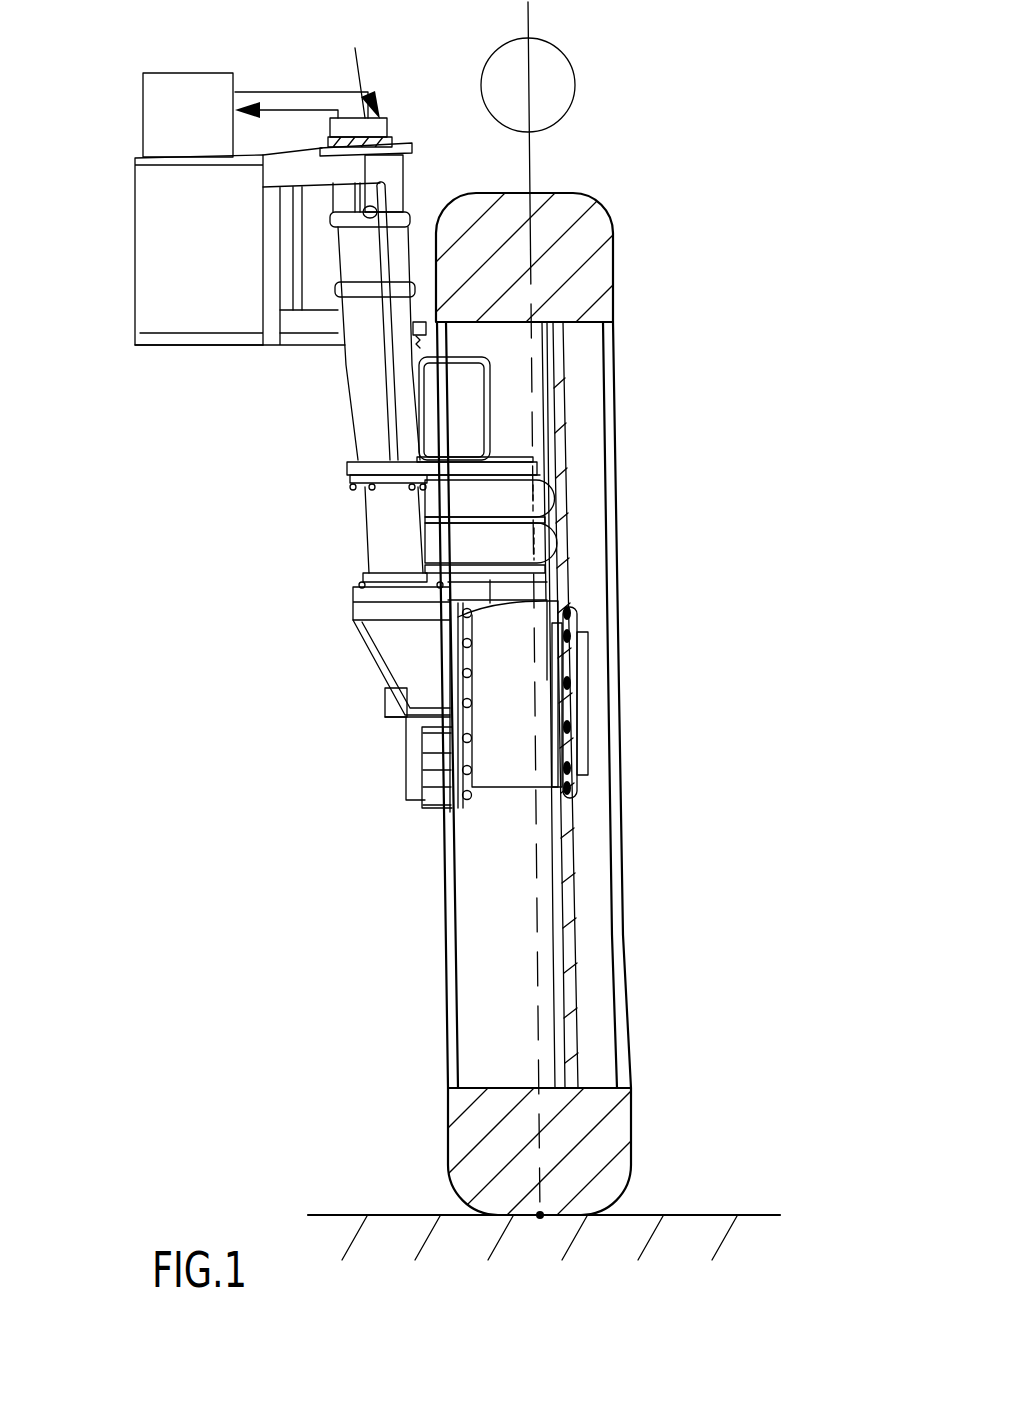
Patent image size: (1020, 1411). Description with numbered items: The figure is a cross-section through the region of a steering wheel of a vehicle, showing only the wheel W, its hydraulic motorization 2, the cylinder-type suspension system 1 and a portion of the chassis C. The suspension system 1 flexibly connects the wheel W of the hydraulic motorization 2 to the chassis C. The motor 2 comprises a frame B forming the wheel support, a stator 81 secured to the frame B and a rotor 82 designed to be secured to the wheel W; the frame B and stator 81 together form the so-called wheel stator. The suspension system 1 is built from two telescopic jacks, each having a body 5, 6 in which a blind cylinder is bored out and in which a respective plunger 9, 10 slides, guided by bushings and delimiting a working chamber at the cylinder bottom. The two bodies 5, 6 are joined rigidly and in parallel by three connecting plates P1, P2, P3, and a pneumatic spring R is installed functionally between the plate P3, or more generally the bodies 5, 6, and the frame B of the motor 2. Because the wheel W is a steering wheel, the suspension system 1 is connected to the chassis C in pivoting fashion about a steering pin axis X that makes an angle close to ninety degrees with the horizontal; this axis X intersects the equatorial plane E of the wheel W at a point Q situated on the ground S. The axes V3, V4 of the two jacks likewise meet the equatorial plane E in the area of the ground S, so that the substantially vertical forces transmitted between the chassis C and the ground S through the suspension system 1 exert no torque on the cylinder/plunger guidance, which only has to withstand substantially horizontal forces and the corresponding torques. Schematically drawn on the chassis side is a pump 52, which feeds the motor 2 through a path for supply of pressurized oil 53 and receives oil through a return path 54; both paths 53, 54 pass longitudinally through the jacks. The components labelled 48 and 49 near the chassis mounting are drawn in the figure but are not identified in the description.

The cylinder-type suspension system 1 is at (437, 644).
The hydraulic motorization 2 is at (404, 707).
The body 5 is at (382, 291).
The body 6 is at (350, 415).
The plunger 9 is at (352, 537).
The plunger 10 is at (368, 540).
The drive unit 48 is at (277, 180).
The bearing bracket 49 is at (323, 330).
The pump 52 is at (210, 132).
The path for supply of pressurized oil 53 is at (320, 90).
The path for return of oil 54 is at (297, 112).
The stator 81 is at (532, 675).
The rotor 82 is at (572, 718).
The frame B is at (412, 768).
The chassis C is at (167, 347).
The equatorial plane E is at (533, 97).
The connecting plate P1 is at (408, 210).
The connecting plate P2 is at (415, 283).
The connecting plate P3 is at (350, 470).
The point Q is at (540, 1216).
The pneumatic spring R is at (543, 503).
The ground S is at (337, 1234).
The axis V3 is at (416, 72).
The axis V4 is at (368, 93).
The wheel W is at (597, 1137).
The steering pin axis X is at (530, 1170).